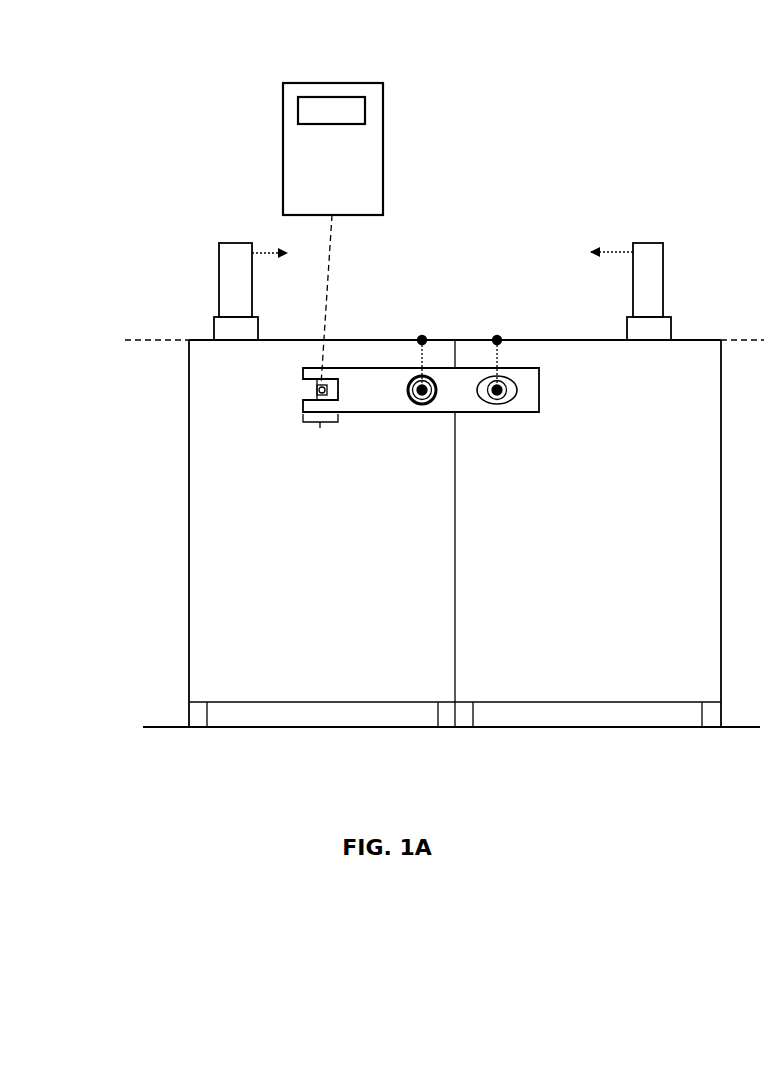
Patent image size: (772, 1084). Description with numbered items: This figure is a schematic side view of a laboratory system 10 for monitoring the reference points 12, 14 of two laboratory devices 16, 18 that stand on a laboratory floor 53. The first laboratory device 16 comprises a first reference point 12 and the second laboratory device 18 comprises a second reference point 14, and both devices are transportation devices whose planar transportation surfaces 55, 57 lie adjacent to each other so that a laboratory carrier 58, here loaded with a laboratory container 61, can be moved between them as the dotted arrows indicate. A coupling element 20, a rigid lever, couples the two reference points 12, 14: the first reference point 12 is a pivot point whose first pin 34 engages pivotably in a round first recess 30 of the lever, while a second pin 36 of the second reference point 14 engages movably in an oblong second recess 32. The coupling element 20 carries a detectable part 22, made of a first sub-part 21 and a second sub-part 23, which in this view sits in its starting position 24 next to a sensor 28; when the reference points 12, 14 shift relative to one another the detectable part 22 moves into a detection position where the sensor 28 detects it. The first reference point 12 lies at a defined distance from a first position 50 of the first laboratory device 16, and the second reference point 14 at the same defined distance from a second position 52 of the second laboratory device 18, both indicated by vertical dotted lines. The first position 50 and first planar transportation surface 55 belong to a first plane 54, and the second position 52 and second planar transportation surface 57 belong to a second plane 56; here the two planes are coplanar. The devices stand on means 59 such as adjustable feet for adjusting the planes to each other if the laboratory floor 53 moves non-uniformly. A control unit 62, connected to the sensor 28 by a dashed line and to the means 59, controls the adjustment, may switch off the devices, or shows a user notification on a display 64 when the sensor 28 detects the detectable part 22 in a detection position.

The laboratory system 10 is at (138, 172).
The first reference point 12 is at (415, 377).
The second reference point 14 is at (507, 377).
The first laboratory device 16 is at (215, 585).
The second laboratory device 18 is at (698, 490).
The coupling element 20 is at (365, 387).
The first sub-part 21 is at (320, 405).
The detectable part 22 is at (320, 436).
The second sub-part 23 is at (308, 373).
The starting position 24 is at (303, 392).
The sensor 28 is at (320, 385).
The first recess 30 is at (420, 378).
The second recess 32 is at (499, 378).
The first pin 34 is at (428, 378).
The second pin 36 is at (490, 378).
The first position 50 is at (422, 336).
The second position 52 is at (498, 337).
The laboratory floor 53 is at (542, 727).
The first plane 54 is at (160, 338).
The first planar transportation surface 55 is at (205, 338).
The second plane 56 is at (738, 340).
The second planar transportation surface 57 is at (682, 340).
The laboratory carrier 58 is at (221, 325).
The means for adjusting 59 is at (702, 703).
The laboratory container 61 is at (222, 237).
The control unit 62 is at (295, 140).
The display 64 is at (318, 110).